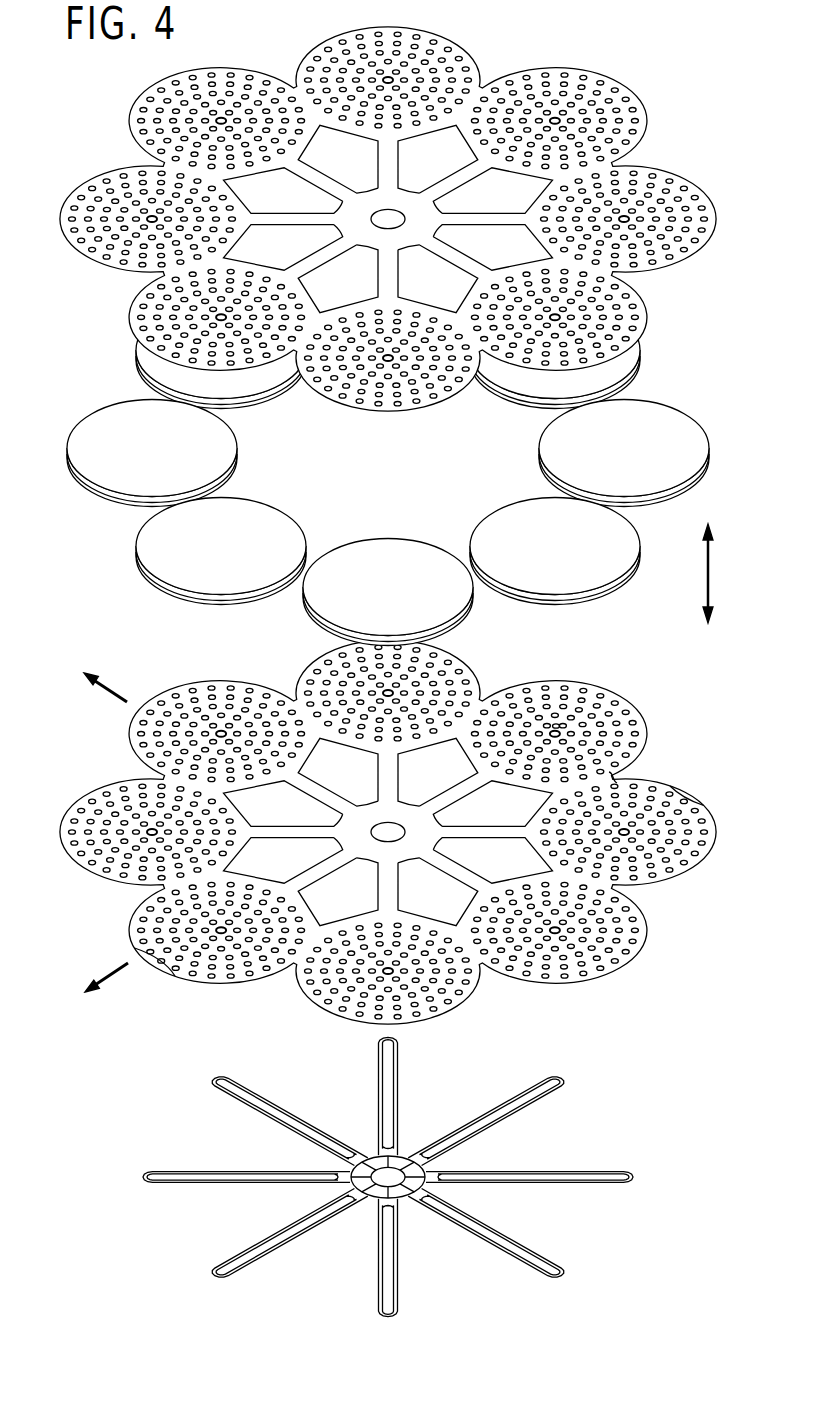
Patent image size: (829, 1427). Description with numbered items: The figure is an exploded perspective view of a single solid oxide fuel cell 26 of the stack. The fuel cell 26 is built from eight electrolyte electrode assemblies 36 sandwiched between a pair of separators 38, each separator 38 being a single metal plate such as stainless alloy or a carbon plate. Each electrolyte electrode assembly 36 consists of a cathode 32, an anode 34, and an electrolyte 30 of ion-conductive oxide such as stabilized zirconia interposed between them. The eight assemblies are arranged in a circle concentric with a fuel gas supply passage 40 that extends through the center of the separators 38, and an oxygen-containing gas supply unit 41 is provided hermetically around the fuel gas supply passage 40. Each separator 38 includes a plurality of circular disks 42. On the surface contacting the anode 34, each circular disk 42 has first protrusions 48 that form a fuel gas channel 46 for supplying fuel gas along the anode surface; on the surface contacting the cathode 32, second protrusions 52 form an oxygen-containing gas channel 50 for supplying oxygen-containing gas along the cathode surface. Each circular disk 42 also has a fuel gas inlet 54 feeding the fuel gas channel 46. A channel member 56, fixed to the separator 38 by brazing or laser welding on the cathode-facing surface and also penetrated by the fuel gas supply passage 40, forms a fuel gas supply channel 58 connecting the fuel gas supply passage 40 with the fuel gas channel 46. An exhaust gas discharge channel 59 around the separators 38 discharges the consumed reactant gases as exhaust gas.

The fuel cell 26 is at (601, 33).
The separator 38 is at (414, 607).
The electrolyte electrode assembly 36 is at (388, 453).
The electrolyte 30 is at (201, 551).
The cathode 32 is at (170, 544).
The anode 34 is at (173, 568).
The circular disk 42 is at (457, 647).
The fuel gas inlet 54 is at (557, 723).
The first protrusion 48 is at (649, 783).
The second protrusion 52 is at (720, 813).
The fuel gas channel 46 is at (655, 833).
The fuel gas supply passage 40 is at (382, 834).
The oxygen-containing gas supply unit 41 is at (327, 897).
The oxygen-containing gas channel 50 is at (583, 983).
The exhaust gas discharge channel 59 is at (141, 974).
The channel member 56 is at (388, 1170).
The fuel gas supply channel 58 is at (246, 1154).